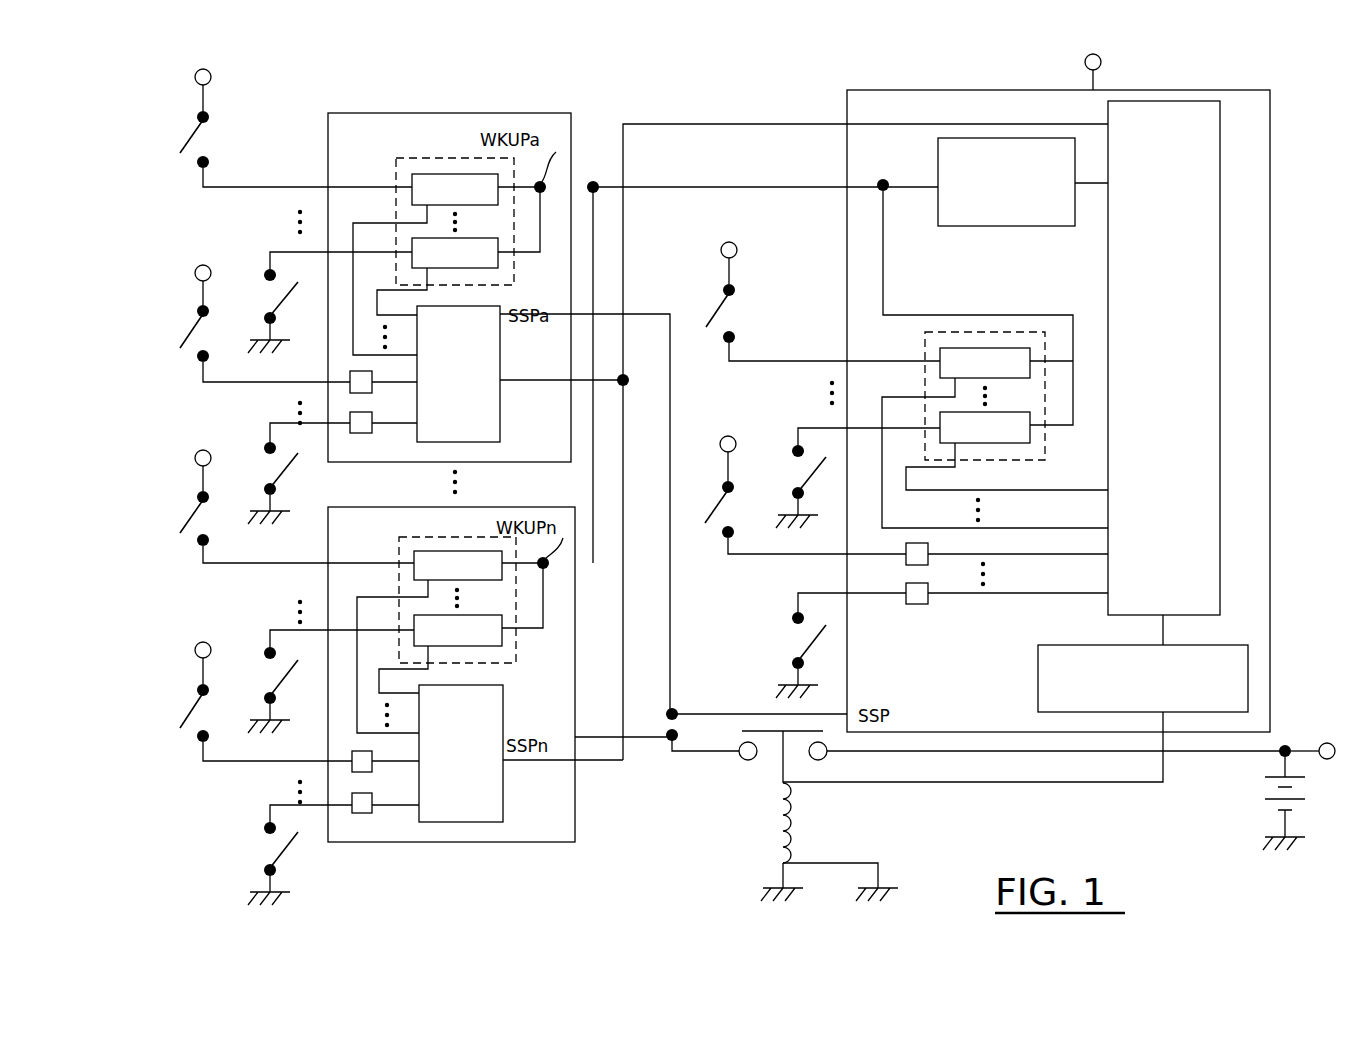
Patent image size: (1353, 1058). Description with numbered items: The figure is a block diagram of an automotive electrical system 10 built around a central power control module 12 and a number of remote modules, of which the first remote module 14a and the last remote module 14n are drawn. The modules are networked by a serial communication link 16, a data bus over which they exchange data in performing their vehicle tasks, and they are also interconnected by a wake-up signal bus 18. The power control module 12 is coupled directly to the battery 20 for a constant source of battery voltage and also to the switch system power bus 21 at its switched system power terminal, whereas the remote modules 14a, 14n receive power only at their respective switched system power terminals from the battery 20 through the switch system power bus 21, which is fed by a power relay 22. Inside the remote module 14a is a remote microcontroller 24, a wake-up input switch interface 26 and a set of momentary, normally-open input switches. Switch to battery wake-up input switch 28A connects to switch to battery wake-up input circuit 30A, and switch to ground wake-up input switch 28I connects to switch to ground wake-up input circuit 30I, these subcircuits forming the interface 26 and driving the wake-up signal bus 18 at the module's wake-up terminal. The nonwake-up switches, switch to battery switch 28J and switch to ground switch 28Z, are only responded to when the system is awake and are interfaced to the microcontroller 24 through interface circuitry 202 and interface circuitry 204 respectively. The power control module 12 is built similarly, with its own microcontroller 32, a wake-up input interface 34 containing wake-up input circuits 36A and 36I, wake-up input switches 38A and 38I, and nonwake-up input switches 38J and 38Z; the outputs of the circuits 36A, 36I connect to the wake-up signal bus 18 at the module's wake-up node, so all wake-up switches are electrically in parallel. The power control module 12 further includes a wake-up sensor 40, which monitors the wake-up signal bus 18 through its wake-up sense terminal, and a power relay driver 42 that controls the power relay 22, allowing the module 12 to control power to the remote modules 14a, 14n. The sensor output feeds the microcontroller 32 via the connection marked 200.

The automotive electrical system 10 is at (535, 92).
The central power control module 12 is at (1270, 200).
The remote module 14a is at (375, 100).
The remote module 14n is at (478, 843).
The serial communication link 16 is at (720, 124).
The wake-up signal bus 18 is at (820, 187).
The battery 20 is at (1270, 780).
The switch system power bus 21 is at (703, 755).
The power relay 22 is at (782, 758).
The remote microcontroller 24 is at (500, 366).
The wake-up input switch interface 26 is at (481, 158).
The switch to battery wake-up input switch 28A is at (190, 146).
The switch to ground wake-up input switch 28I is at (276, 298).
The switch to battery nonwake-up input switch 28J is at (184, 336).
The switch to ground nonwake-up input switch 28Z is at (275, 474).
The switch to battery wake-up input circuit 30A is at (438, 174).
The switch to ground wake-up input circuit 30I is at (498, 264).
The microcontroller 32 is at (1225, 311).
The wake-up input interface 34 is at (1006, 332).
The wake-up input circuit 36A is at (947, 348).
The wake-up input circuit 36I is at (1030, 443).
The switch to battery wake-up input switch 38A is at (720, 322).
The switch to ground wake-up input switch 38I is at (806, 474).
The nonwake-up input switch 38J is at (712, 527).
The nonwake-up input switch 38Z is at (805, 642).
The wake-up sensor 40 is at (968, 138).
The power relay driver 42 is at (1250, 662).
The interrupt line 200 is at (1098, 185).
The interface circuitry 202 is at (350, 378).
The interface circuitry 204 is at (372, 433).